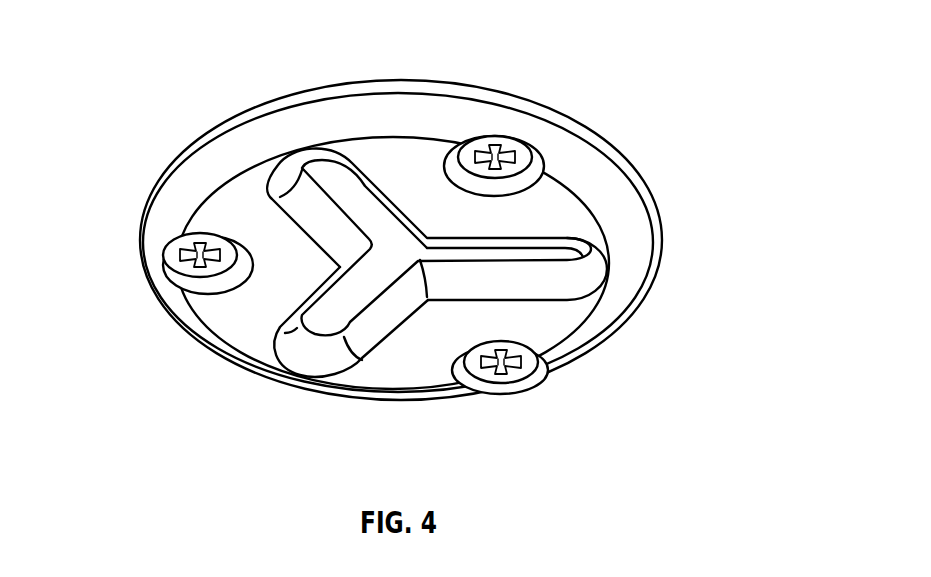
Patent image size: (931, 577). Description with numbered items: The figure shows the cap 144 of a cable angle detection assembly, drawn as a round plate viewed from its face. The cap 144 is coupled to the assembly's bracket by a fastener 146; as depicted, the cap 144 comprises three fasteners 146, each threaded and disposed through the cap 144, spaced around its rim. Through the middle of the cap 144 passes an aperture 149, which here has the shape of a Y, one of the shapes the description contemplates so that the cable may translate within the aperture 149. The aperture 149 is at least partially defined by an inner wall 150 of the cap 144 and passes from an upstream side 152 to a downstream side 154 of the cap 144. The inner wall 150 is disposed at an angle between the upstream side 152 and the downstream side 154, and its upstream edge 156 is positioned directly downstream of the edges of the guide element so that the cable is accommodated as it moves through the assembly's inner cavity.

The cap 144 is at (130, 139).
The fastener 146 is at (500, 148).
The aperture 149 is at (538, 252).
The inner wall 150 is at (530, 284).
The upstream side 152 is at (592, 132).
The downstream side 154 is at (596, 190).
The upstream edge 156 is at (329, 332).